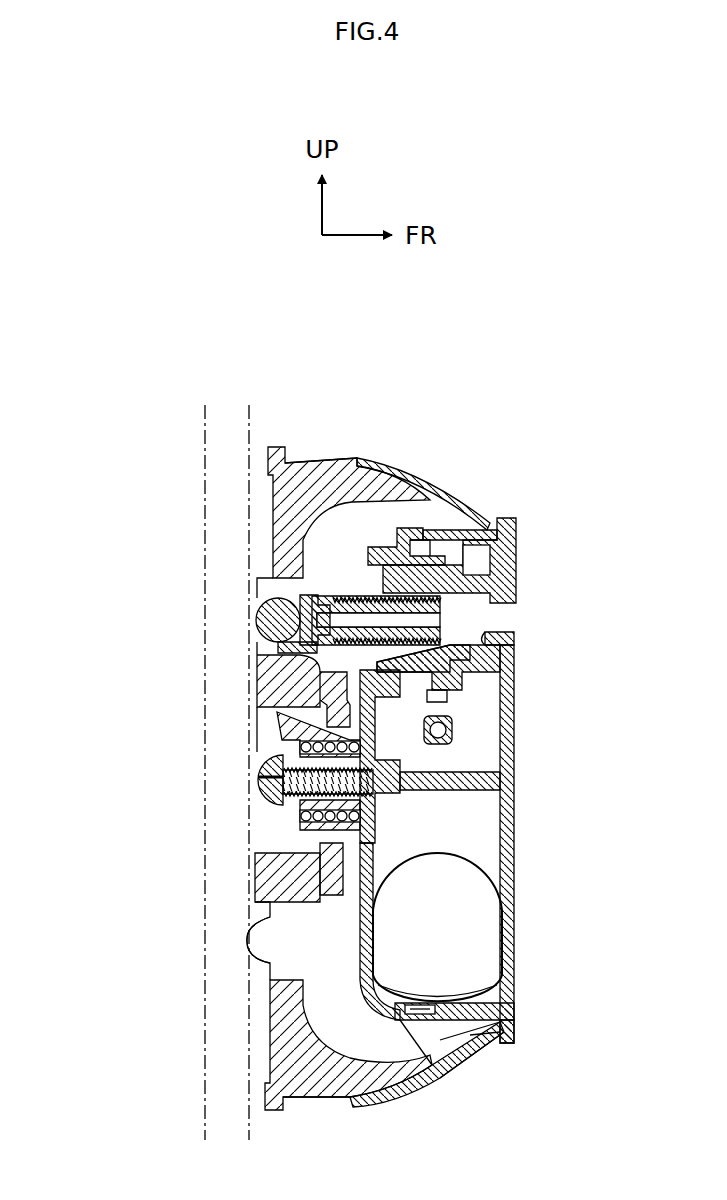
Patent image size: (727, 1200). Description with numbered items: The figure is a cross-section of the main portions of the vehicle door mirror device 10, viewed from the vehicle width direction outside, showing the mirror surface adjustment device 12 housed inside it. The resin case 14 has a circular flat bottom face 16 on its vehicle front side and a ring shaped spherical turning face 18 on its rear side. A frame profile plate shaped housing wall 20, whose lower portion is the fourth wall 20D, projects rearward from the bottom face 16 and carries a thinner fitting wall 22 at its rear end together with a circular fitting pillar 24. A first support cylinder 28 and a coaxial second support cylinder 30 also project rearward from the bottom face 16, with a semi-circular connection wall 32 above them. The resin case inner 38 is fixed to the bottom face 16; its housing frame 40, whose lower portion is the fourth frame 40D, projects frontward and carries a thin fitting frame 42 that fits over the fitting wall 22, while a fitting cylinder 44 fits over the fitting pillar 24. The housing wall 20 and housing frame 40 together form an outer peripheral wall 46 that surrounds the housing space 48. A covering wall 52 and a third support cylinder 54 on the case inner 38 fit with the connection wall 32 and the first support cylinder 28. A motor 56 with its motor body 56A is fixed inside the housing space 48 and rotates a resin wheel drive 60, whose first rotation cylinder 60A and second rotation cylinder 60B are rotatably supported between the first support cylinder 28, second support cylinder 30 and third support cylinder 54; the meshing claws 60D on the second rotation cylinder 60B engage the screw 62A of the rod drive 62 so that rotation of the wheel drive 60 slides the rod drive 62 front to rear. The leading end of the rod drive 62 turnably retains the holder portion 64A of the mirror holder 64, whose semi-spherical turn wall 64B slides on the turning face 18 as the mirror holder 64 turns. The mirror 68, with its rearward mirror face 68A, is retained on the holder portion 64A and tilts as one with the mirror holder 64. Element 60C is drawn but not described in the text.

The vehicle door mirror device 10 is at (140, 408).
The mirror surface adjustment device 12 is at (340, 376).
The case 14 is at (520, 753).
The bottom face 16 is at (502, 810).
The turning face 18 is at (462, 1040).
The housing wall 20 is at (505, 1018).
The fourth wall 20D is at (510, 1040).
The fitting wall 22 is at (420, 1003).
The fitting pillar 24 is at (470, 797).
The first support cylinder 28 is at (500, 567).
The second support cylinder 30 is at (485, 638).
The connection wall 32 is at (490, 548).
The case inner 38 is at (350, 933).
The housing frame 40 is at (395, 1025).
The fourth frame 40D is at (408, 1035).
The fitting frame 42 is at (435, 1030).
The fitting cylinder 44 is at (395, 800).
The outer peripheral wall 46 is at (475, 1035).
The housing space 48 is at (495, 837).
The covering wall 52 is at (460, 535).
The third support cylinder 54 is at (385, 545).
The motor 56 is at (480, 857).
The motor body 56A is at (480, 910).
The wheel drive 60 is at (470, 560).
The first rotation cylinder 60A is at (490, 670).
The second rotation cylinder 60B is at (420, 540).
The protrusion of holder 60C is at (447, 700).
The meshing claw 60D is at (375, 640).
The rod drive 62 is at (465, 606).
The screw 62A is at (268, 575).
The mirror holder 64 is at (277, 445).
The holder portion 64A is at (290, 1118).
The turn wall 64B is at (318, 462).
The mirror 68 is at (205, 725).
The mirror face 68A is at (205, 913).